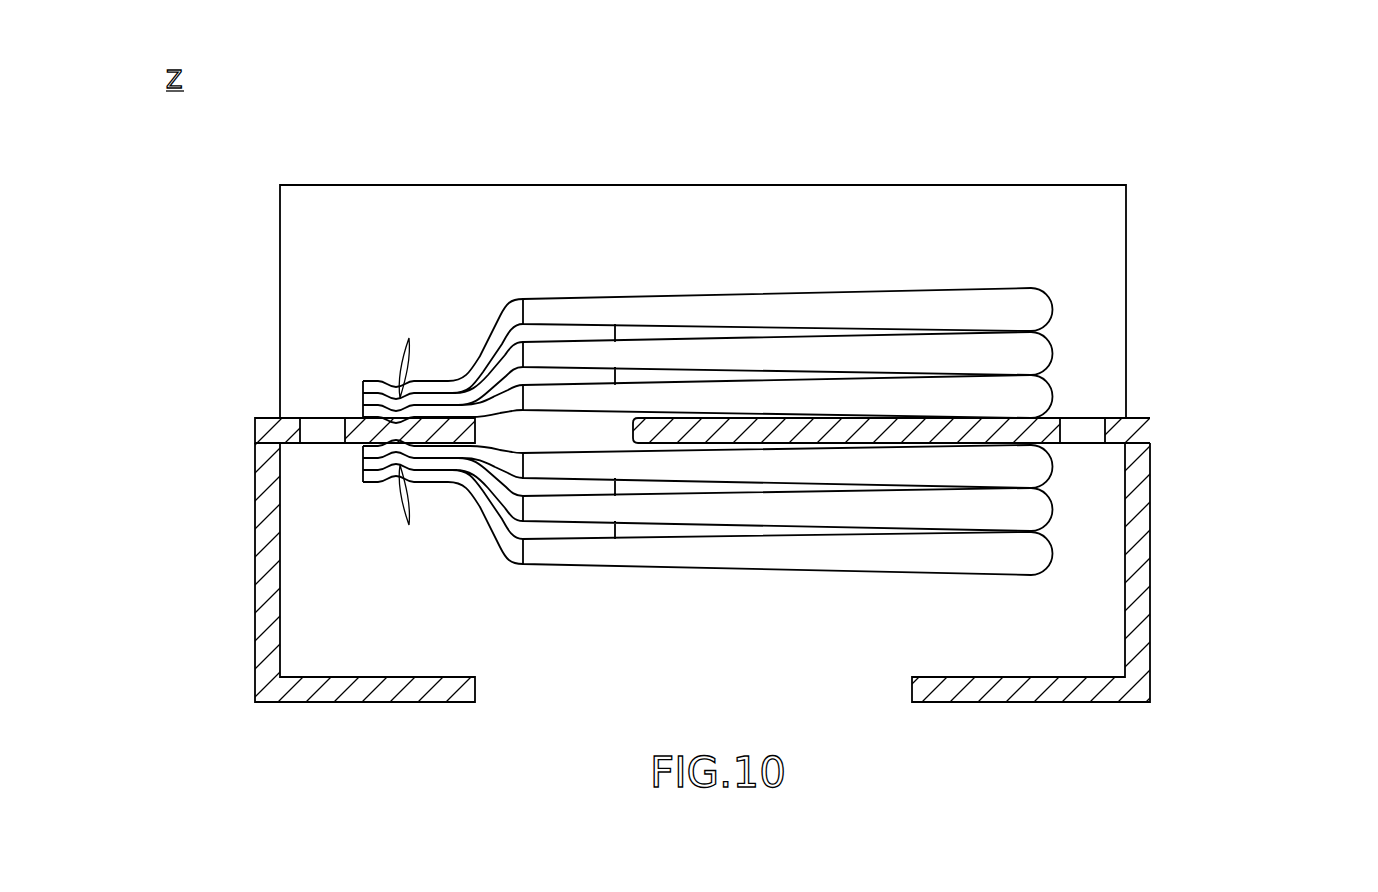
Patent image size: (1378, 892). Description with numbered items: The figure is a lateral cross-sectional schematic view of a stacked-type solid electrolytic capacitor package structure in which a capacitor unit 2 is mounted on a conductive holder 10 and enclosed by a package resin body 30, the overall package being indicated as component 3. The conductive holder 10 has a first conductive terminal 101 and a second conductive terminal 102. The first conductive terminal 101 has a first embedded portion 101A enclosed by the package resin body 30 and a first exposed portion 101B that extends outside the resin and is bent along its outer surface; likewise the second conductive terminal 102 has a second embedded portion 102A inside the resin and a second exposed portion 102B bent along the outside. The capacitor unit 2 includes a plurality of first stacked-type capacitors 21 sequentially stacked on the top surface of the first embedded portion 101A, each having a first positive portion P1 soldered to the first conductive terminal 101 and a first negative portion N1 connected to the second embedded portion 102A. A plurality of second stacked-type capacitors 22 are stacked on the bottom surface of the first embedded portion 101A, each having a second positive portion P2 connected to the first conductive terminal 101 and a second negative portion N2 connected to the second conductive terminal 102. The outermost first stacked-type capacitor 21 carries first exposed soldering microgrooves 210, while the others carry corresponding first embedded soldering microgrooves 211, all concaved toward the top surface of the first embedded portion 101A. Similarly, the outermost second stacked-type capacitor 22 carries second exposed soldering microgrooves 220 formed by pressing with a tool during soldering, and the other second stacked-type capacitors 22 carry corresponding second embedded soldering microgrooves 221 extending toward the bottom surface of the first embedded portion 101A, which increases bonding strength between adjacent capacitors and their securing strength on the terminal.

The conductive holder 10 is at (96, 510).
The first conductive terminal 101 is at (158, 487).
The first embedded portion 101A is at (363, 460).
The first exposed portion 101B is at (272, 582).
The second conductive terminal 102 is at (1265, 585).
The second embedded portion 102A is at (965, 430).
The second exposed portion 102B is at (1137, 647).
The capacitor unit 2 is at (1183, 293).
The first stacked-type capacitor 21 is at (1035, 303).
The first exposed soldering microgroove 210 is at (393, 382).
The first embedded soldering microgroove 211 is at (414, 355).
The second stacked-type capacitor 22 is at (1035, 463).
The second exposed soldering microgroove 220 is at (390, 482).
The second embedded soldering microgroove 221 is at (416, 509).
The package resin body 3 is at (278, 262).
The package resin body 30 is at (305, 303).
The first positive portion P1 is at (475, 328).
The second positive portion P2 is at (475, 538).
The first negative portion N1 is at (895, 288).
The second negative portion N2 is at (895, 578).